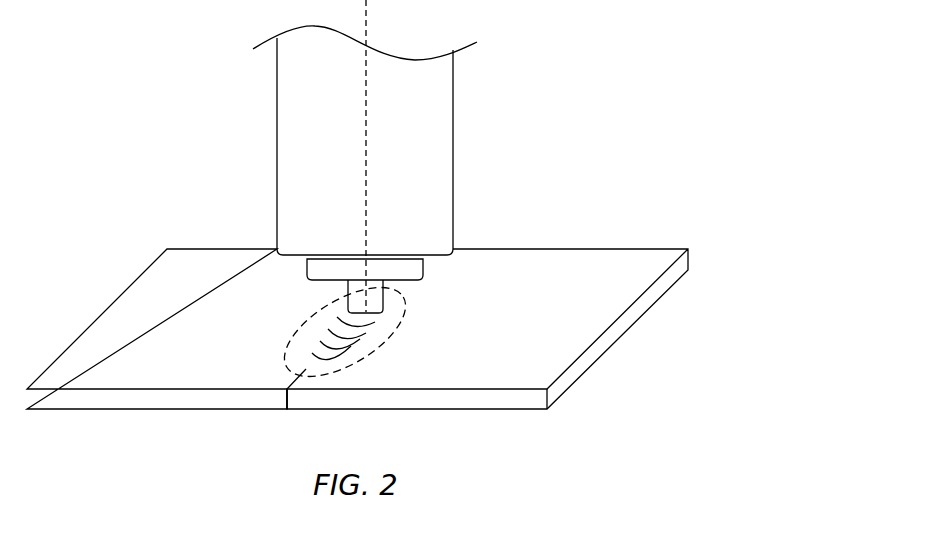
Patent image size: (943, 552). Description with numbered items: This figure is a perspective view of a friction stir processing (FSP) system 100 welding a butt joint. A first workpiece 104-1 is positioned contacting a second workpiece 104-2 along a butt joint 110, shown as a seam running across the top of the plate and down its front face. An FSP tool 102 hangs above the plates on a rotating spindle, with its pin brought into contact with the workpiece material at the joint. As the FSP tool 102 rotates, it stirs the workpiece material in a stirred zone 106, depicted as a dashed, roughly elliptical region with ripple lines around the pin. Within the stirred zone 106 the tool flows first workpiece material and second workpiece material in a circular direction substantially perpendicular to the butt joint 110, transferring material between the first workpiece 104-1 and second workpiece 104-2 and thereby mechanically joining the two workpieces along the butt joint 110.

The FSP system 100 is at (583, 128).
The FSP tool 102 is at (388, 288).
The first workpiece 104-1 is at (152, 314).
The second workpiece 104-2 is at (580, 281).
The stirred zone 106 is at (378, 328).
The butt joint 110 is at (285, 412).